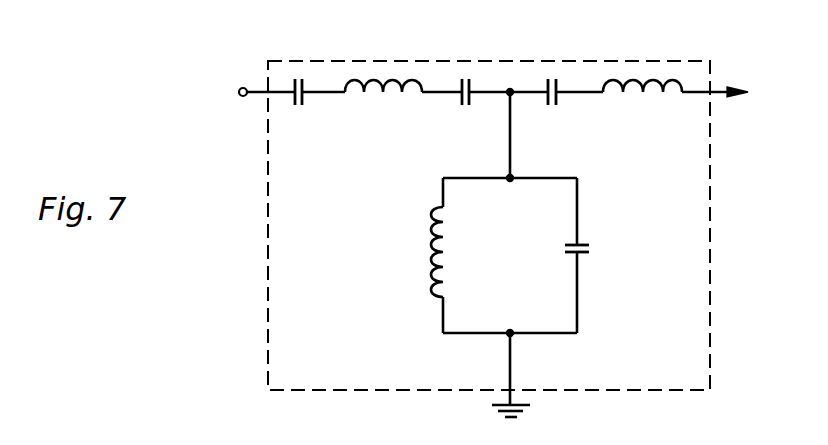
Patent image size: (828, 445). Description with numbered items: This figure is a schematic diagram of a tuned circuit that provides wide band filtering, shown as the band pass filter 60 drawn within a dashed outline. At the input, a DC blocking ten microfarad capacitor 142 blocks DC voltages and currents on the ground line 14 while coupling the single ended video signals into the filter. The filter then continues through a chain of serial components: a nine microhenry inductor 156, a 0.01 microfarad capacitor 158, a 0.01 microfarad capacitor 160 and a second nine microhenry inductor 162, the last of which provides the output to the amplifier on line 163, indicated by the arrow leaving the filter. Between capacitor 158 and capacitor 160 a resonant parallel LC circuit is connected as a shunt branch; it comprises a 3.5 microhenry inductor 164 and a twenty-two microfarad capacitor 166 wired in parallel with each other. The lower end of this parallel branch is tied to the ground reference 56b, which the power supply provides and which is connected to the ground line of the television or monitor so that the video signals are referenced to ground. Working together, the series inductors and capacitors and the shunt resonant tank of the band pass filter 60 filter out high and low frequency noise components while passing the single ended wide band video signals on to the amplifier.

The ground line 14 is at (248, 96).
The filter 60 is at (268, 253).
The DC blocking capacitor 142 is at (303, 79).
The inductor 156 is at (390, 90).
The capacitor 158 is at (467, 78).
The capacitor 160 is at (556, 78).
The inductor 162 is at (652, 82).
The line 163 is at (703, 94).
The inductor 164 is at (432, 247).
The capacitor 166 is at (590, 251).
The ground reference 56b is at (512, 362).